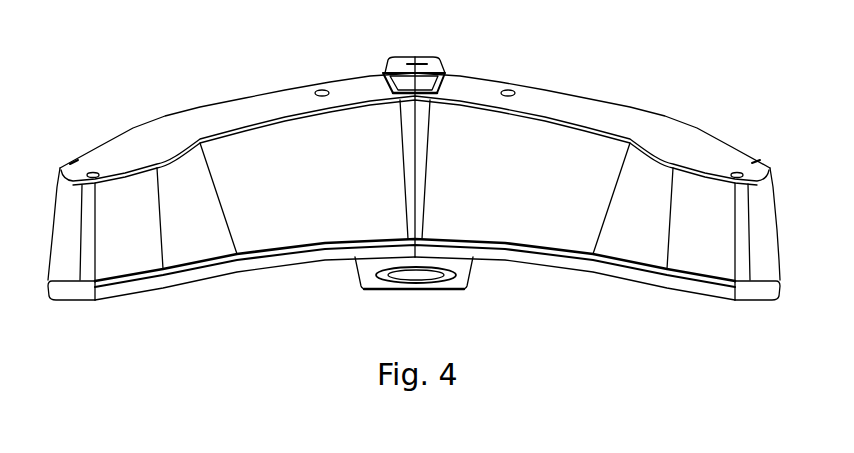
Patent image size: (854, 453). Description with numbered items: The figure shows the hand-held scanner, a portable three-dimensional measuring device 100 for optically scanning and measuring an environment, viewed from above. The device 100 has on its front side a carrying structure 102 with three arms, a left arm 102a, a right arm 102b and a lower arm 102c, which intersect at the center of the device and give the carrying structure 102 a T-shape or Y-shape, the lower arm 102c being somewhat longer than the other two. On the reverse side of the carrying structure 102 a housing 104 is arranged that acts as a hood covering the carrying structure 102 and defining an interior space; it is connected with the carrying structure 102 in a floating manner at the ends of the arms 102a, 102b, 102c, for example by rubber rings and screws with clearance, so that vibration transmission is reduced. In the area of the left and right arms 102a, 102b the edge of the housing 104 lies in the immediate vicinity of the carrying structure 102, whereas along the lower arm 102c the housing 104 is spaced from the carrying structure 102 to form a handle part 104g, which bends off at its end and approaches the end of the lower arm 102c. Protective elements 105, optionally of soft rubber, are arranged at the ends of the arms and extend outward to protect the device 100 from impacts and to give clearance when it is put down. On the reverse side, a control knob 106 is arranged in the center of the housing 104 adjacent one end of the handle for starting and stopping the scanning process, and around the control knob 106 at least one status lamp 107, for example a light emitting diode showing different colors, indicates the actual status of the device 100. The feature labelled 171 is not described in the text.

The 3D measuring device 100 is at (420, 209).
The carrying structure 102 is at (612, 278).
The left arm 102a is at (707, 288).
The right arm 102b is at (107, 295).
The lower arm 102c is at (462, 270).
The housing 104 is at (582, 140).
The handle part 104g is at (395, 62).
The protective elements 105 is at (62, 297).
The control knob 106 is at (420, 82).
The status lamp 107 is at (448, 78).
The opening 171 is at (417, 273).